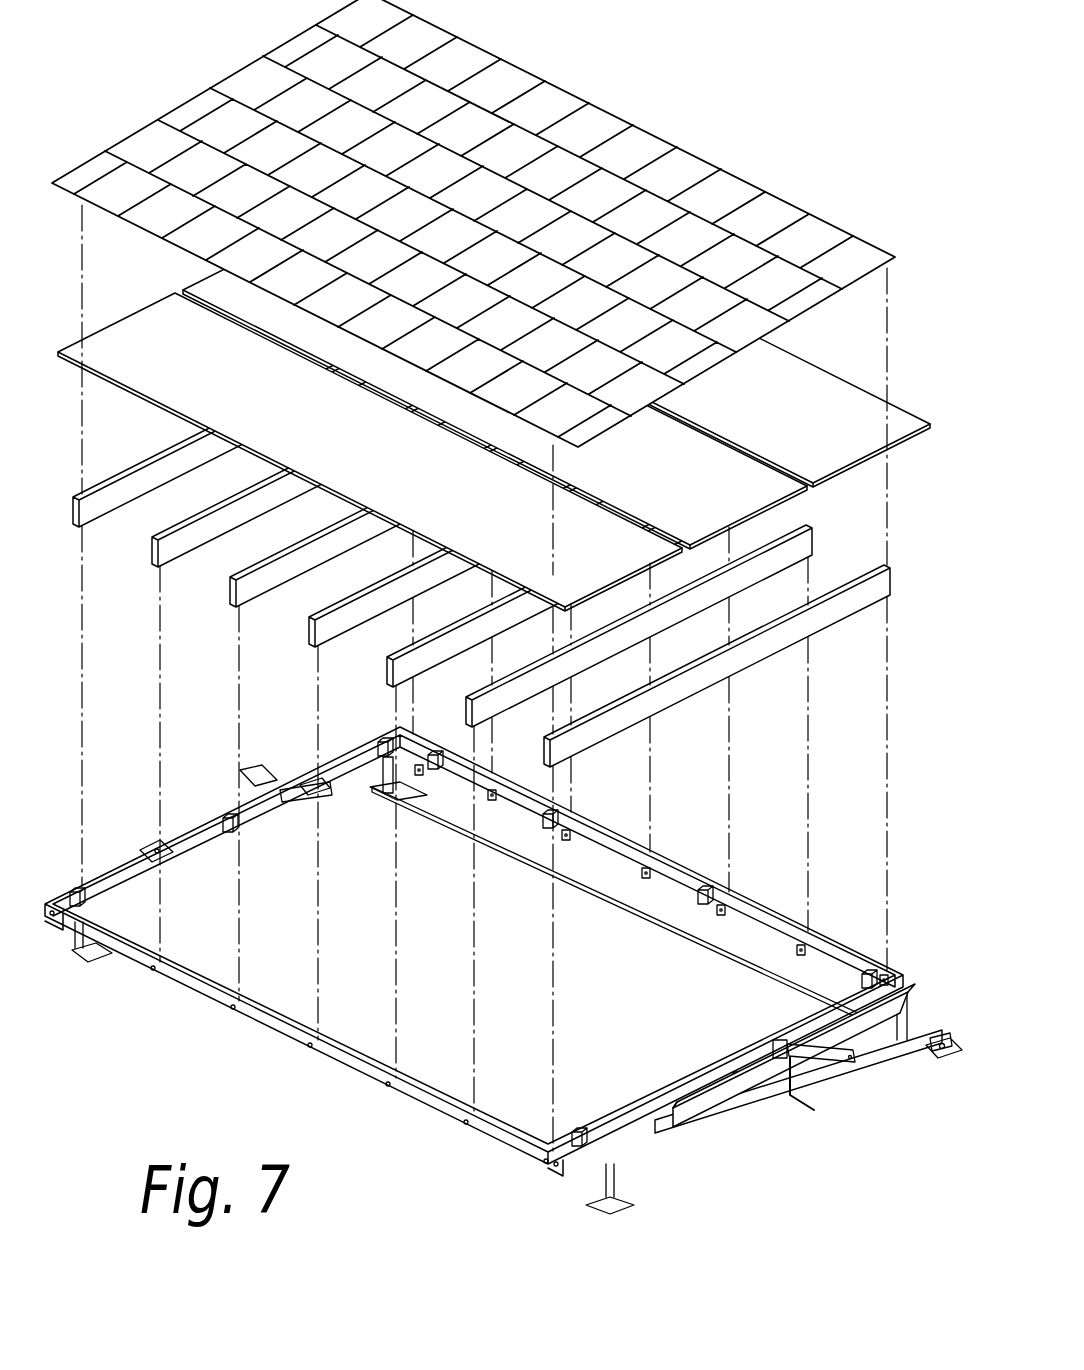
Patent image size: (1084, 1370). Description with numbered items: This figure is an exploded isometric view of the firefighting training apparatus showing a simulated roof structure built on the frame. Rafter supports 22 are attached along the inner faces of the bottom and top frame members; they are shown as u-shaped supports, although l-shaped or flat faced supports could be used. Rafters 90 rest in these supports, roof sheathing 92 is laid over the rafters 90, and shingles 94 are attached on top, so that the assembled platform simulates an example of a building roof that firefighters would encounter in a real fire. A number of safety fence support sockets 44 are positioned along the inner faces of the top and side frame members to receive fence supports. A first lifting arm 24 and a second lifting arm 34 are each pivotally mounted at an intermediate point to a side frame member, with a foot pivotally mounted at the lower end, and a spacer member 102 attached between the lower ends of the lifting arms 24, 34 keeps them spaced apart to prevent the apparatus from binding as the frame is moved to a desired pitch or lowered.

The rafter supports 22 is at (80, 950).
The first lifting arm 24 is at (272, 820).
The second lifting arm 34 is at (745, 1100).
The safety fence support sockets 44 is at (78, 896).
The rafters 90 is at (97, 510).
The roof sheathing 92 is at (800, 423).
The shingles 94 is at (660, 131).
The spacer member 102 is at (640, 920).